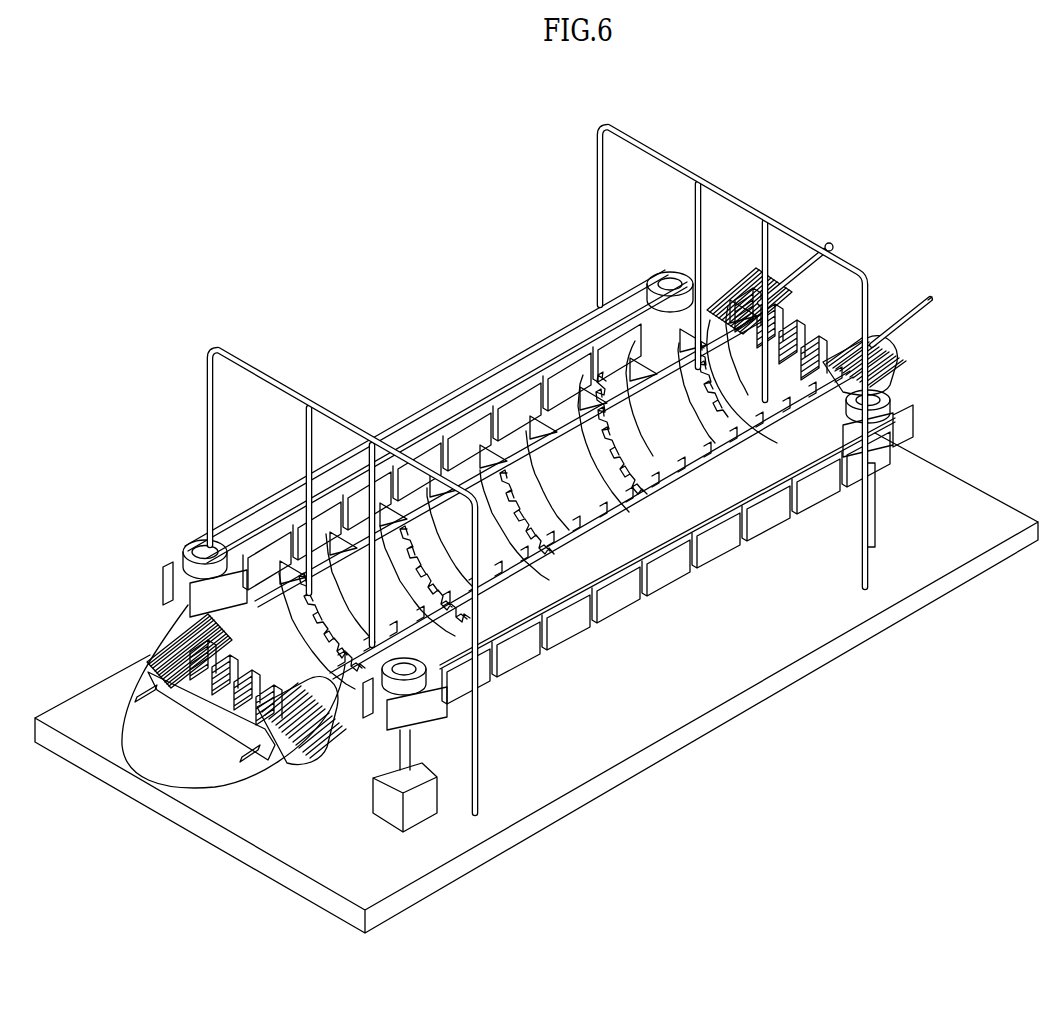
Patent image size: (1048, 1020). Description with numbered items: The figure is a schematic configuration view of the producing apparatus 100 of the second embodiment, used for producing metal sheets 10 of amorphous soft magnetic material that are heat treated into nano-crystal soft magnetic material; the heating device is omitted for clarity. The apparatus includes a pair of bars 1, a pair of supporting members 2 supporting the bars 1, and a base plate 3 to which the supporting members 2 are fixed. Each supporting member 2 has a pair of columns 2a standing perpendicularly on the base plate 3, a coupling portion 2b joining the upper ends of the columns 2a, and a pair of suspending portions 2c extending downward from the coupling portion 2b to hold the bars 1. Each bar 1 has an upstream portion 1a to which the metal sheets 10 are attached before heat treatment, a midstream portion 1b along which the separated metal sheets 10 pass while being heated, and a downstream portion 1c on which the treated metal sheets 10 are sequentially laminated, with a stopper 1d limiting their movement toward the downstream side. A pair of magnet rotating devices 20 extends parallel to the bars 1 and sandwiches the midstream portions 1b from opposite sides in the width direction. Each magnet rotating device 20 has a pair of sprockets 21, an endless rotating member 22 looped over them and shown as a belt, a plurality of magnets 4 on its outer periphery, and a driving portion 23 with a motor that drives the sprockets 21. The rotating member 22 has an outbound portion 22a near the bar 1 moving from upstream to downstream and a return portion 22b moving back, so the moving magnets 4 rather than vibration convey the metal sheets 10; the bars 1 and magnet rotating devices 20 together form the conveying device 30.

The producing apparatus 100 is at (395, 210).
The bar 1 is at (793, 263).
The upstream portion 1a is at (908, 318).
The midstream portion 1b is at (522, 447).
The downstream portion 1c is at (330, 690).
The stopper 1d is at (173, 700).
The supporting member 2 is at (547, 459).
The column 2a is at (482, 742).
The coupling portion 2b is at (281, 380).
The suspending portion 2c is at (305, 432).
The base plate 3 is at (988, 505).
The magnet 4 is at (560, 400).
The metal sheet 10 is at (895, 370).
The magnet rotating device 20 is at (503, 345).
The sprocket 21 is at (428, 678).
The rotating member 22 is at (545, 600).
The outbound portion 22a is at (713, 538).
The return portion 22b is at (796, 490).
The driving portion 23 is at (390, 800).
The conveying device 30 is at (813, 587).